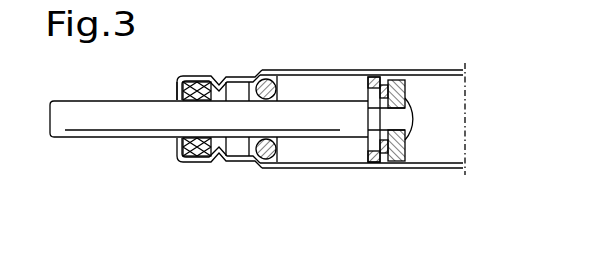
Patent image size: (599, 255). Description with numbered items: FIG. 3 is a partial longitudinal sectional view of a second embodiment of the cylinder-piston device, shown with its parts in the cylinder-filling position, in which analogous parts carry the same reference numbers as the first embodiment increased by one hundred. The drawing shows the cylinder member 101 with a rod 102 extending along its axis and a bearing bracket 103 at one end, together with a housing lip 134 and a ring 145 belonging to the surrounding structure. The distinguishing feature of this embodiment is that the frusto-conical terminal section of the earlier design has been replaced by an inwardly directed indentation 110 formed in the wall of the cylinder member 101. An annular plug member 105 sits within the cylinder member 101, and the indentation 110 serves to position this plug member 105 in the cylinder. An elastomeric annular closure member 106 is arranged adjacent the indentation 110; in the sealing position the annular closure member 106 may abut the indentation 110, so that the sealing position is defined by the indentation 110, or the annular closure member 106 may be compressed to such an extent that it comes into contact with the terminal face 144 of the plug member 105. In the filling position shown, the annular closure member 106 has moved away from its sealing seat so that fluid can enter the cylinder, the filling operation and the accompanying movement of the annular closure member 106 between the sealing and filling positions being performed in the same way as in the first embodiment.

The cylinder member 101 is at (350, 70).
The rod 102 is at (77, 123).
The bearing bracket 103 is at (414, 88).
The plug member 105 is at (200, 162).
The annular closure member 106 is at (272, 80).
The indentation 110 is at (221, 161).
The housing lip 134 is at (178, 81).
The terminal face 144 is at (218, 80).
The ring 145 is at (236, 79).